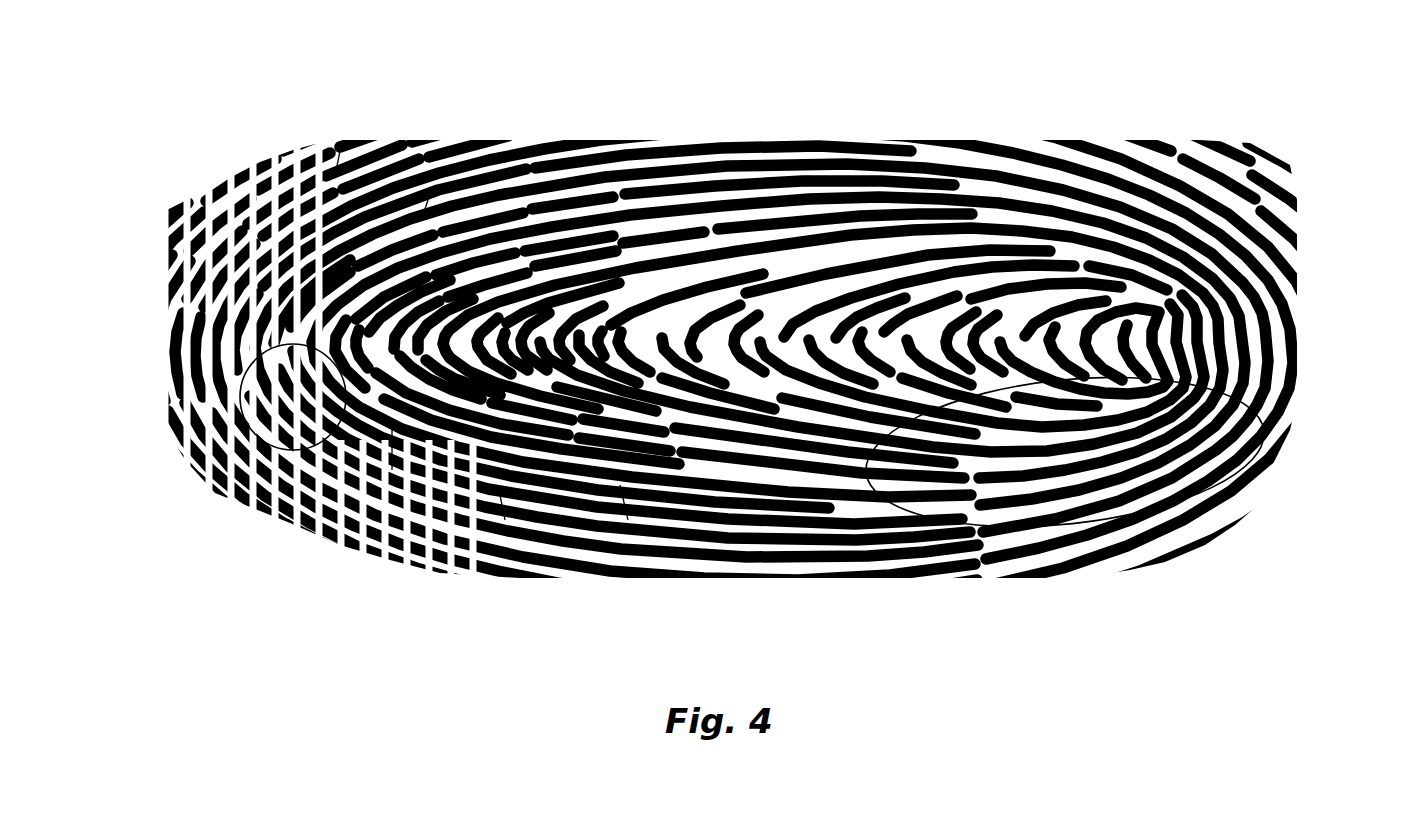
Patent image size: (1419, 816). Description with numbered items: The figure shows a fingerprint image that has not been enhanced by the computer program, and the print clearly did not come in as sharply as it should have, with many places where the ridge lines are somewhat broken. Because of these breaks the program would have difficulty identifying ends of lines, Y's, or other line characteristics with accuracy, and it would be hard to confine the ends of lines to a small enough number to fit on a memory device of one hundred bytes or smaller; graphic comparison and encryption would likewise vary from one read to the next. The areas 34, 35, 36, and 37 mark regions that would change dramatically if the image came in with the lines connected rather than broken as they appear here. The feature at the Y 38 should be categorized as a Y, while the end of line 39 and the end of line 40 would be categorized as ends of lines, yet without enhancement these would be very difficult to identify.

The area 34 is at (1265, 432).
The area 35 is at (505, 520).
The area 36 is at (237, 421).
The area 37 is at (432, 188).
The Y 38 is at (341, 146).
The end of line 39 is at (392, 470).
The end of line 40 is at (628, 520).